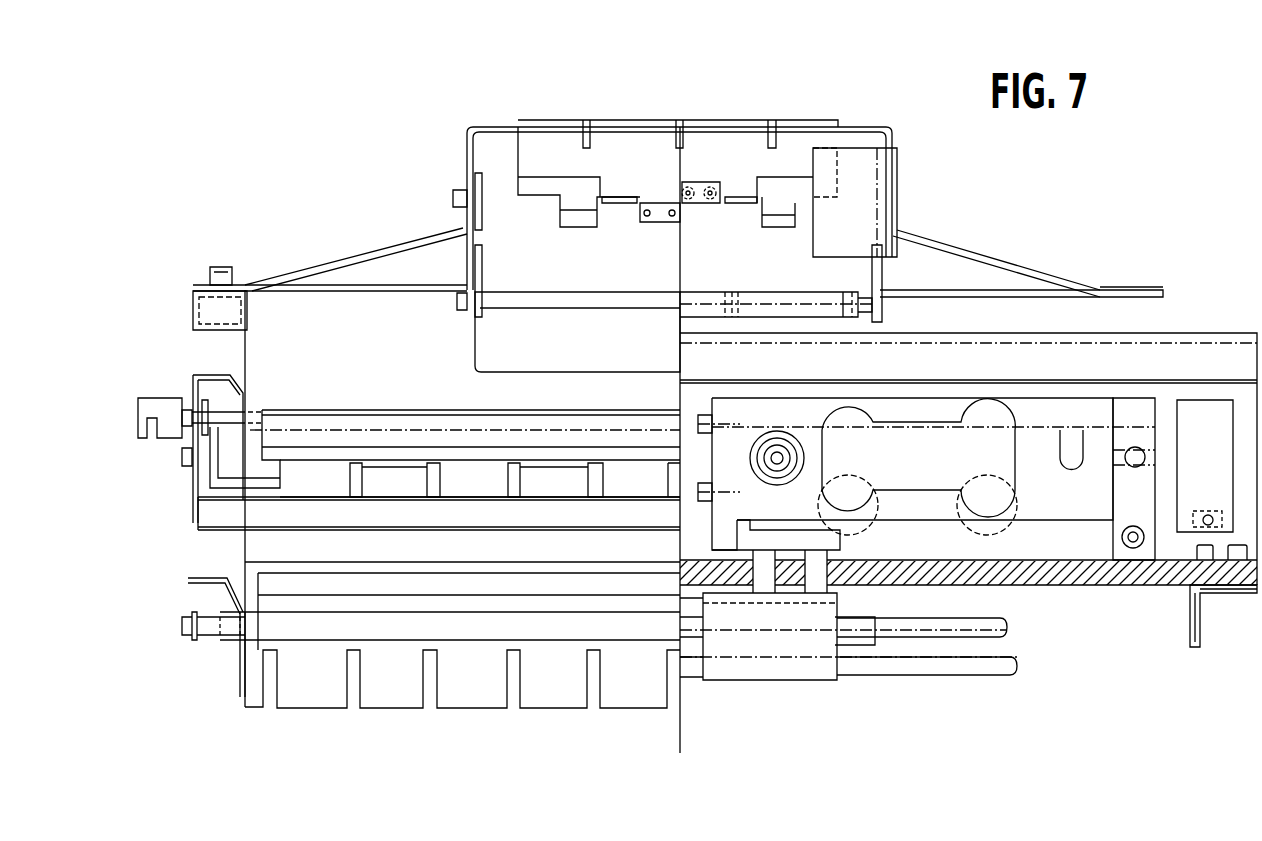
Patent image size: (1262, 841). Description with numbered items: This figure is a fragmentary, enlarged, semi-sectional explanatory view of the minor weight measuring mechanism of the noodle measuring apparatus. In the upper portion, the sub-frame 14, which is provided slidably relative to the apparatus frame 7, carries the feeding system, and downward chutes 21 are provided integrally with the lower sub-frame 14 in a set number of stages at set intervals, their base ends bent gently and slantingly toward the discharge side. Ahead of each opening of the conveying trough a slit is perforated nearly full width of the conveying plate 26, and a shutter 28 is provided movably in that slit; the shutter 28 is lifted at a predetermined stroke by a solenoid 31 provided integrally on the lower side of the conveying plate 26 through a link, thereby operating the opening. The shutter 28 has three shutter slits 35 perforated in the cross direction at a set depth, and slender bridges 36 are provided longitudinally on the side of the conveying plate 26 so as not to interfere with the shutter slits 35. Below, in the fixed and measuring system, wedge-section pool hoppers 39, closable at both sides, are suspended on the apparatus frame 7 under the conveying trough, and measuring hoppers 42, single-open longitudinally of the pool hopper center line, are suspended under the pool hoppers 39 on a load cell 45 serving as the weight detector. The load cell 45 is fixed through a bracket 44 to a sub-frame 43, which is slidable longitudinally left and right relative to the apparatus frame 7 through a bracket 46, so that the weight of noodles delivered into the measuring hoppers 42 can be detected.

The apparatus frame 7 is at (1200, 635).
The sub-frame 14 is at (252, 285).
The downward chute 21 is at (495, 335).
The conveying plate 26 is at (490, 125).
The shutter 28 is at (548, 140).
The solenoid 31 is at (880, 178).
The shutter slit 35 is at (772, 118).
The slender bridge 36 is at (588, 120).
The pool hopper 39 is at (330, 460).
The measuring hopper 42 is at (630, 700).
The sub-frame 43 is at (200, 578).
The bracket 44 is at (1138, 548).
The load cell 45 is at (1072, 505).
The bracket 46 is at (820, 593).